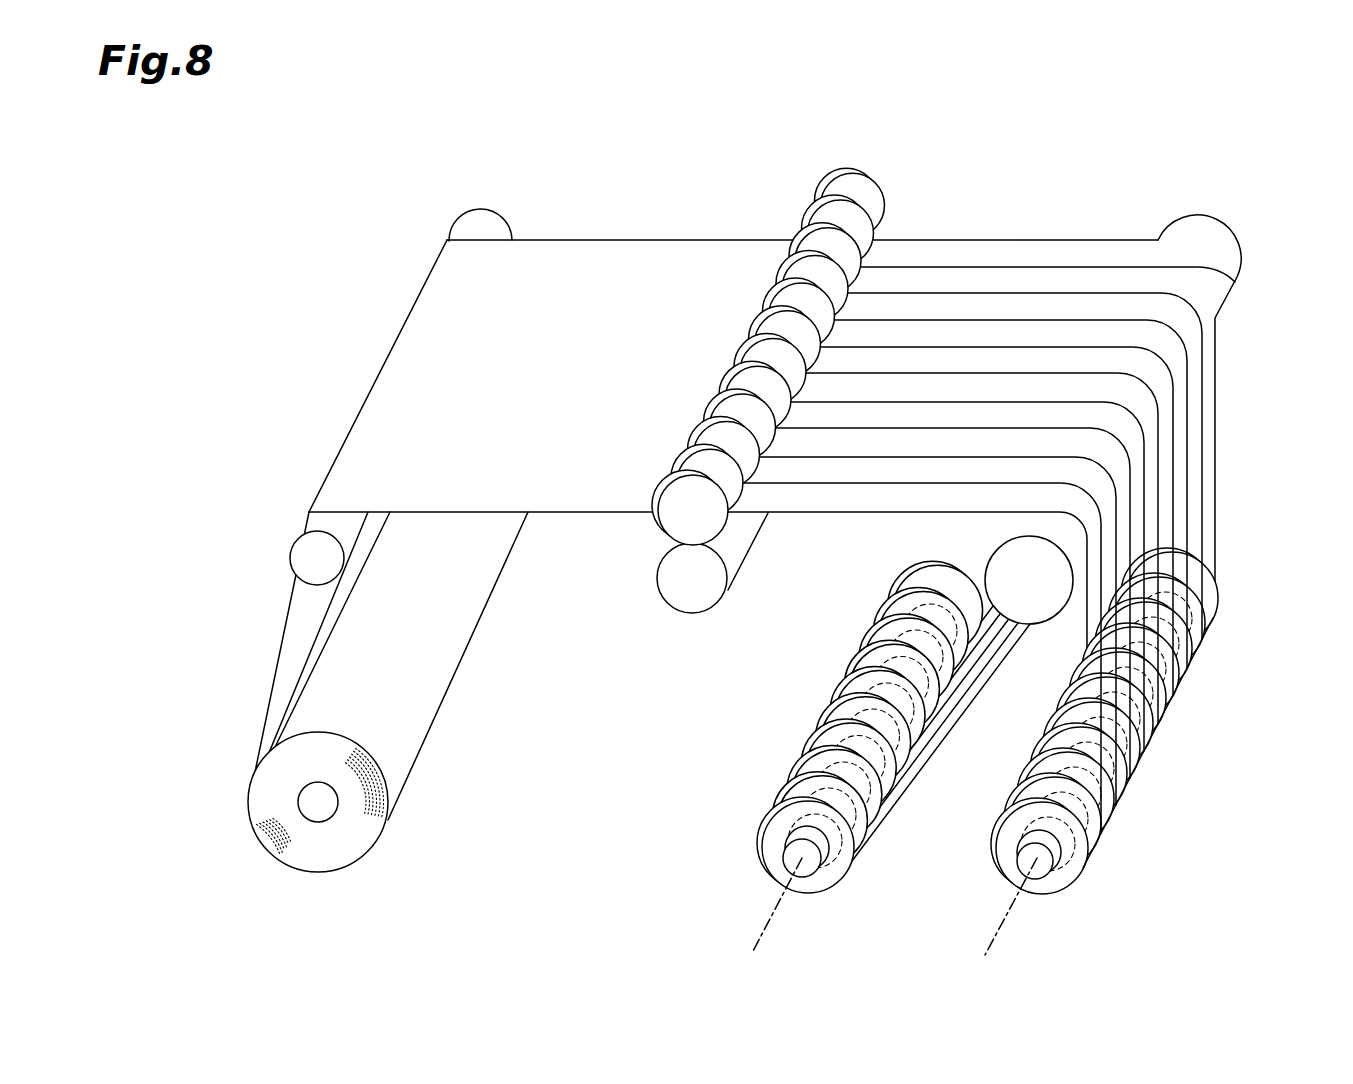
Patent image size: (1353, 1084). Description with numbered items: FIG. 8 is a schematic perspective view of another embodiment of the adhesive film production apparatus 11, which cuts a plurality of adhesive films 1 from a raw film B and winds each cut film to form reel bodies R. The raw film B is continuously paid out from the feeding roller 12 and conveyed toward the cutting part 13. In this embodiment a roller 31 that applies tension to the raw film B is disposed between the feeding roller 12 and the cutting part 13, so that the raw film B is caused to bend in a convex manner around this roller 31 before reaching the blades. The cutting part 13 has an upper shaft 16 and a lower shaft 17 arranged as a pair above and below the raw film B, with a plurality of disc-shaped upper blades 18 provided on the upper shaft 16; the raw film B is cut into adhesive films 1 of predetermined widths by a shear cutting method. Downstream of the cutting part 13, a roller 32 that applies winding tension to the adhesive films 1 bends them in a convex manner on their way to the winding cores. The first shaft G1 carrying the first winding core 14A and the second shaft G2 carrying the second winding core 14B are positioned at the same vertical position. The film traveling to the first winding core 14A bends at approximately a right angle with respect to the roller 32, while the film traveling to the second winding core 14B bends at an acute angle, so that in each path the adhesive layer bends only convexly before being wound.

The adhesive film 1 is at (958, 305).
The adhesive film production apparatus 11 is at (382, 190).
The feeding roller 12 is at (322, 820).
The cutting part 13 is at (765, 207).
The first winding core 14A is at (1045, 862).
The second winding core 14B is at (827, 893).
The upper shaft 16 is at (672, 470).
The lower shaft 17 is at (735, 540).
The upper blade 18 is at (789, 220).
The roller 31 is at (312, 558).
The roller 32 is at (1030, 588).
The raw film B is at (571, 257).
The reel body R is at (869, 588).
The first shaft G1 is at (995, 936).
The second shaft G2 is at (758, 934).